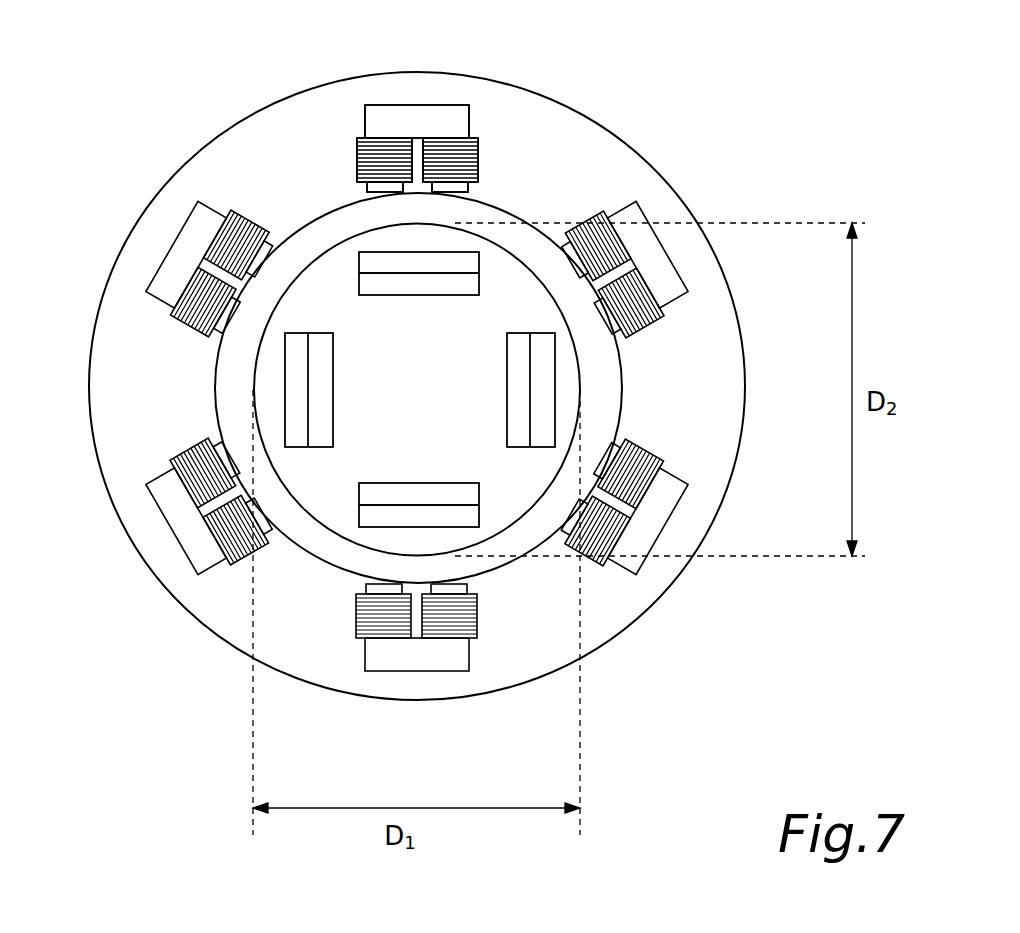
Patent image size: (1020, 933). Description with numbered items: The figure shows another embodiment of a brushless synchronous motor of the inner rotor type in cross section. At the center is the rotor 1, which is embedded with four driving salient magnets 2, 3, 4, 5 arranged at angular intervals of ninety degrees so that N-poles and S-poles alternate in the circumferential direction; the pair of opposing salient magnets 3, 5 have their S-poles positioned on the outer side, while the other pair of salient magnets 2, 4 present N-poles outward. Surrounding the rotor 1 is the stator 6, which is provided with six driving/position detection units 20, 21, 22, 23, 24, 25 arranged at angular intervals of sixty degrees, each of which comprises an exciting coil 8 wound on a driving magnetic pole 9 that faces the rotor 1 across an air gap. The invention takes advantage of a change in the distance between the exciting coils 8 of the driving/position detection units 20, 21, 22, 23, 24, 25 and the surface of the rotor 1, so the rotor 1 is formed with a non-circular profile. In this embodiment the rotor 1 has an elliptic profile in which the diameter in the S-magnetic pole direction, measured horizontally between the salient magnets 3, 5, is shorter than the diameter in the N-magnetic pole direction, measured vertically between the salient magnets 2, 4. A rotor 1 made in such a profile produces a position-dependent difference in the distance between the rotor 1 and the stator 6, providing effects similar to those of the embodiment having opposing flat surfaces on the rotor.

The rotor 1 is at (340, 513).
The driving salient magnet 2 is at (372, 262).
The driving salient magnet 3 is at (545, 403).
The driving salient magnet 4 is at (482, 514).
The driving salient magnet 5 is at (298, 364).
The stator 6 is at (218, 638).
The exciting coil 8 is at (363, 138).
The driving magnetic pole 9 is at (397, 122).
The driving/position detection unit 20 is at (485, 122).
The driving/position detection unit 21 is at (680, 308).
The driving/position detection unit 22 is at (625, 566).
The driving/position detection unit 23 is at (480, 655).
The driving/position detection unit 24 is at (208, 572).
The driving/position detection unit 25 is at (212, 210).